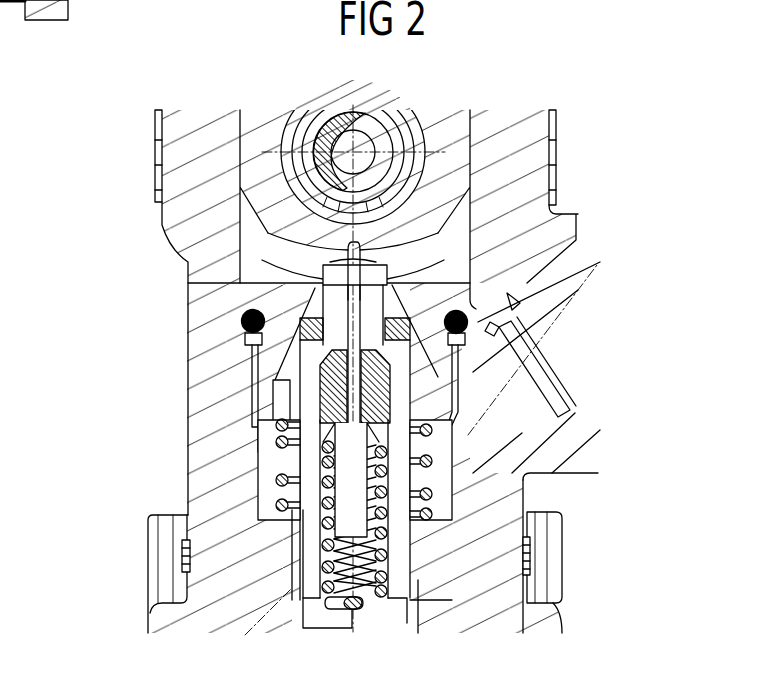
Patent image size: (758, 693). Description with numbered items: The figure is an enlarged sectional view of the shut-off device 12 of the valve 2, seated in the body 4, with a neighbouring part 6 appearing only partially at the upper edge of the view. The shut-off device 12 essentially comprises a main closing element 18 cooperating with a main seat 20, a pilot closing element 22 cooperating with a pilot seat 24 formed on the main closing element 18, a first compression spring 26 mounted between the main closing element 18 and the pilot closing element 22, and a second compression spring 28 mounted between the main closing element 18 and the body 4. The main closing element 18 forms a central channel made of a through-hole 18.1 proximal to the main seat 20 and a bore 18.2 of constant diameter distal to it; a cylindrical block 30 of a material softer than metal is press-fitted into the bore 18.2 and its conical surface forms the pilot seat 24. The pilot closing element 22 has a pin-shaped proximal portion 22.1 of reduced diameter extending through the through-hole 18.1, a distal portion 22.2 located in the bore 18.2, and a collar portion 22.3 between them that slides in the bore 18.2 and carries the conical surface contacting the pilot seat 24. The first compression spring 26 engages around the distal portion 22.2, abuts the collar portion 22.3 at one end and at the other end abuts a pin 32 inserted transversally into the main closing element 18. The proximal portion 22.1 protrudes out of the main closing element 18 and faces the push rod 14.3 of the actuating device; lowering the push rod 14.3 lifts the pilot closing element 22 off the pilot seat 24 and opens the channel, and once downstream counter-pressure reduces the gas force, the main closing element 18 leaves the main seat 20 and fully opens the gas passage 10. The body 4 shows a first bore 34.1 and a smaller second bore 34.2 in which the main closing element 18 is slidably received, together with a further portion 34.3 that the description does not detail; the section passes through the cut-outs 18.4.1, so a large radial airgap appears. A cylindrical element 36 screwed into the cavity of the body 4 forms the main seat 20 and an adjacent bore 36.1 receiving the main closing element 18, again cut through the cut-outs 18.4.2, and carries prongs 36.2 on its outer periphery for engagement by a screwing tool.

The valve arrangement 2 is at (568, 106).
The body 4 is at (495, 190).
The connection 6 is at (28, 18).
The gas passage 10 is at (405, 620).
The shut-off device 12 is at (74, 346).
The push rod 14.3 is at (265, 130).
The main closing element 18 is at (268, 363).
The through-hole 18.1 is at (410, 350).
The bore 18.2 is at (388, 483).
The cut-outs 18.4.1 is at (298, 577).
The cut-outs 18.4.2 is at (290, 408).
The main seat 20 is at (330, 279).
The pilot closing element 22 is at (290, 446).
The proximal portion 22.1 is at (365, 294).
The distal portion 22.2 is at (380, 520).
The collar portion 22.3 is at (430, 438).
The pilot seat 24 is at (385, 410).
The first compression spring 26 is at (387, 582).
The second compression spring 28 is at (318, 510).
The cylindrical block 30 is at (400, 378).
The pin 32 is at (360, 610).
The first bore 34.1 is at (262, 482).
The second bore 34.2 is at (290, 604).
The bearing 34.3 is at (298, 532).
The cylindrical element 36 is at (305, 318).
The bore 36.1 is at (285, 405).
The prongs 36.2 is at (300, 283).